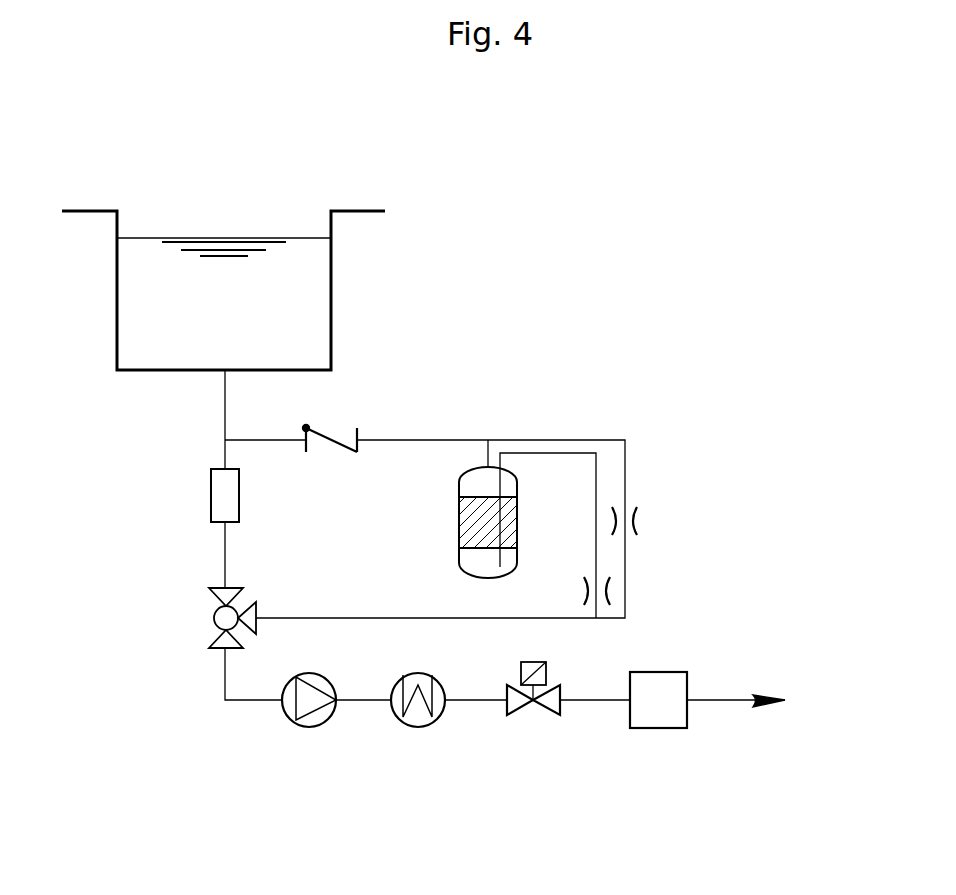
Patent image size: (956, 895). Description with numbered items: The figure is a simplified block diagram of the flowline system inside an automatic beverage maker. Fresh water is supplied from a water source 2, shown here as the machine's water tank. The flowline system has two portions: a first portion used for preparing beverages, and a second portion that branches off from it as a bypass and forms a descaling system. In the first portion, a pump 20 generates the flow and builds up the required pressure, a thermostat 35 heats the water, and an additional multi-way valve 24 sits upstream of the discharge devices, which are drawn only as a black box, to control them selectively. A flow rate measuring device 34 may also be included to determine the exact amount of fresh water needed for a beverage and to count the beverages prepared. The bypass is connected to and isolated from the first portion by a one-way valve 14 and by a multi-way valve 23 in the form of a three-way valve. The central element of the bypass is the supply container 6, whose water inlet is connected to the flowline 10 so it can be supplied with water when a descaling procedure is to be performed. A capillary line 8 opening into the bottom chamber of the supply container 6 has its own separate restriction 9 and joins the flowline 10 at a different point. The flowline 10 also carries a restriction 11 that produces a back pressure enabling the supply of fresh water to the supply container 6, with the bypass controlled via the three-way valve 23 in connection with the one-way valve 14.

The water source 2 is at (312, 312).
The one-way valve 14 is at (327, 433).
The flow rate measuring device 34 is at (223, 498).
The multi-way valve 23 is at (215, 617).
The supply container 6 is at (460, 518).
The flowline 10 is at (550, 440).
The capillary line 8 is at (598, 463).
The restriction 11 is at (640, 520).
The restriction 9 is at (612, 592).
The pump 20 is at (302, 730).
The thermostat 35 is at (405, 730).
The additional multi-way valve 24 is at (517, 703).